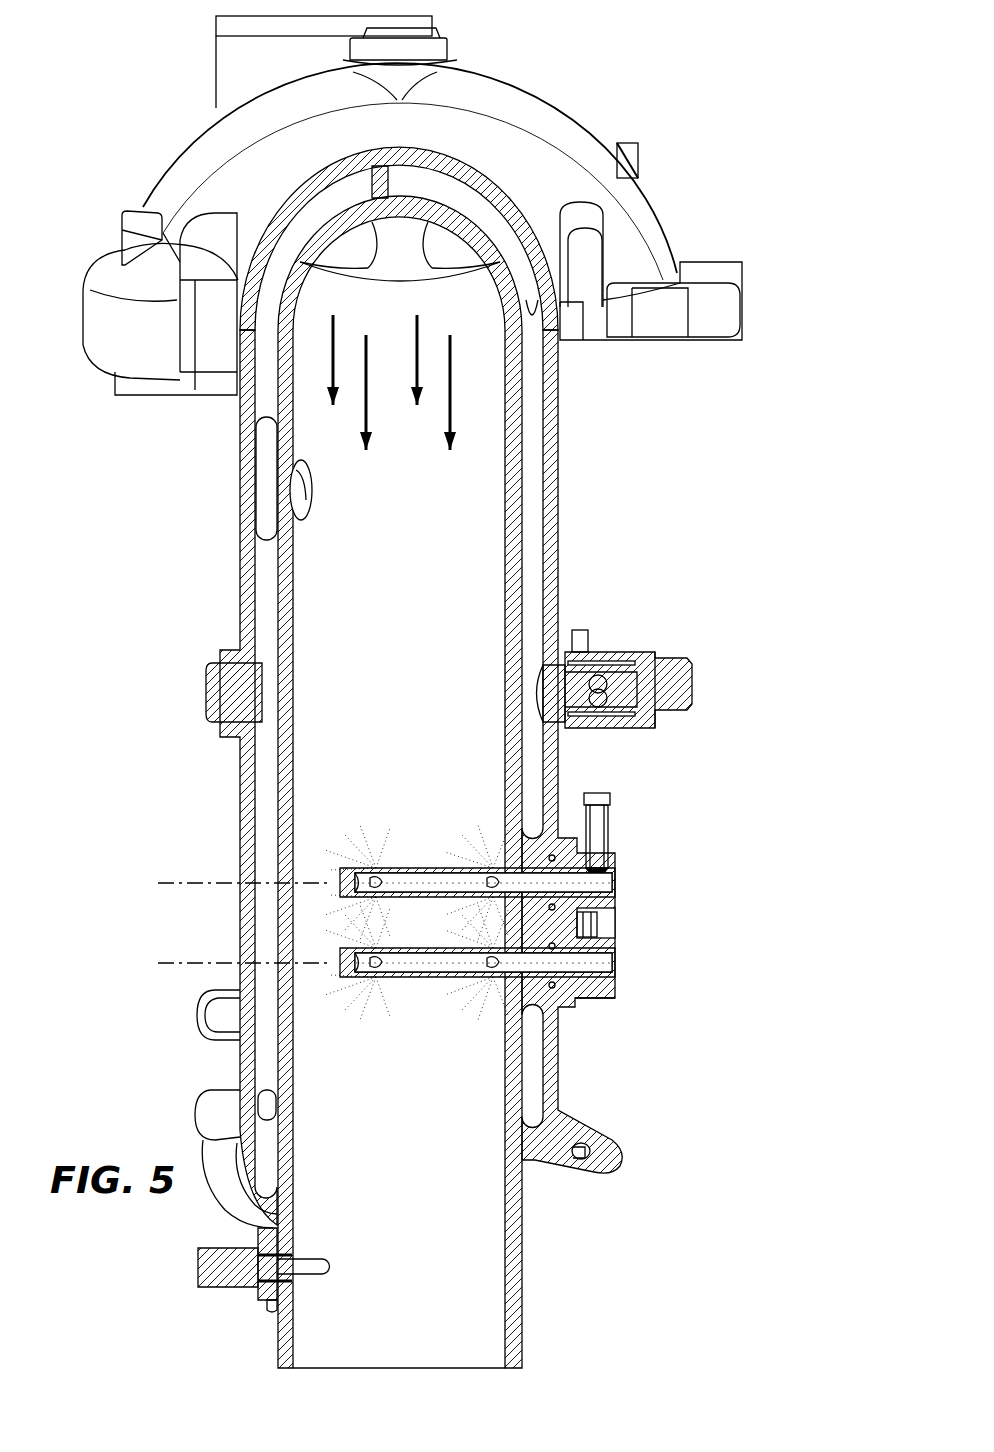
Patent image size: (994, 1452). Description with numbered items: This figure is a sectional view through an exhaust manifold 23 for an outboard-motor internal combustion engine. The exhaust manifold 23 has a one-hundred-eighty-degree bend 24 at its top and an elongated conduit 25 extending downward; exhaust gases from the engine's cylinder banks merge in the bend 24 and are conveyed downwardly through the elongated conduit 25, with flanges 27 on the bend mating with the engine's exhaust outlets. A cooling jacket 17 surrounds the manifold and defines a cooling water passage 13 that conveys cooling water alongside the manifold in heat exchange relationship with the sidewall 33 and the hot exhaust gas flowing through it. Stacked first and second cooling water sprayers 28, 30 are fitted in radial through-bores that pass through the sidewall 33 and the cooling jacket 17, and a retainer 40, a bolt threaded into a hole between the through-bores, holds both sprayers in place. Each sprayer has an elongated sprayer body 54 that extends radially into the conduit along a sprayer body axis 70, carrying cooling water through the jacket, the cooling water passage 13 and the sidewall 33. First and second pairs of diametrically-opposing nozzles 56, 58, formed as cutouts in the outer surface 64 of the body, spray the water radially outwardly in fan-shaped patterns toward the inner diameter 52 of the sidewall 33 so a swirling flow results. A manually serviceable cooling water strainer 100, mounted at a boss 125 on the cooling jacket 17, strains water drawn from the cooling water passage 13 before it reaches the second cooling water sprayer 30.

The cooling water passage 13 is at (533, 565).
The cooling jacket 17 is at (253, 475).
The exhaust manifold 23 is at (645, 90).
The 180-degree bend 24 is at (510, 97).
The elongated conduit 25 is at (288, 597).
The flanges 27 is at (718, 272).
The first cooling water sprayer 28 is at (632, 843).
The second cooling water sprayer 30 is at (634, 998).
The sidewall 33 is at (548, 416).
The retainer 40 is at (600, 924).
The inner diameter 52 is at (503, 531).
The sprayer body 54 is at (419, 866).
The first pair of diametrically-opposing nozzles 56 is at (378, 878).
The second pair of diametrically-opposing nozzles 58 is at (495, 878).
The outer surface 64 is at (381, 876).
The sprayer body axis 70 is at (196, 880).
The cooling water strainer 100 is at (690, 643).
The boss 125 is at (550, 660).